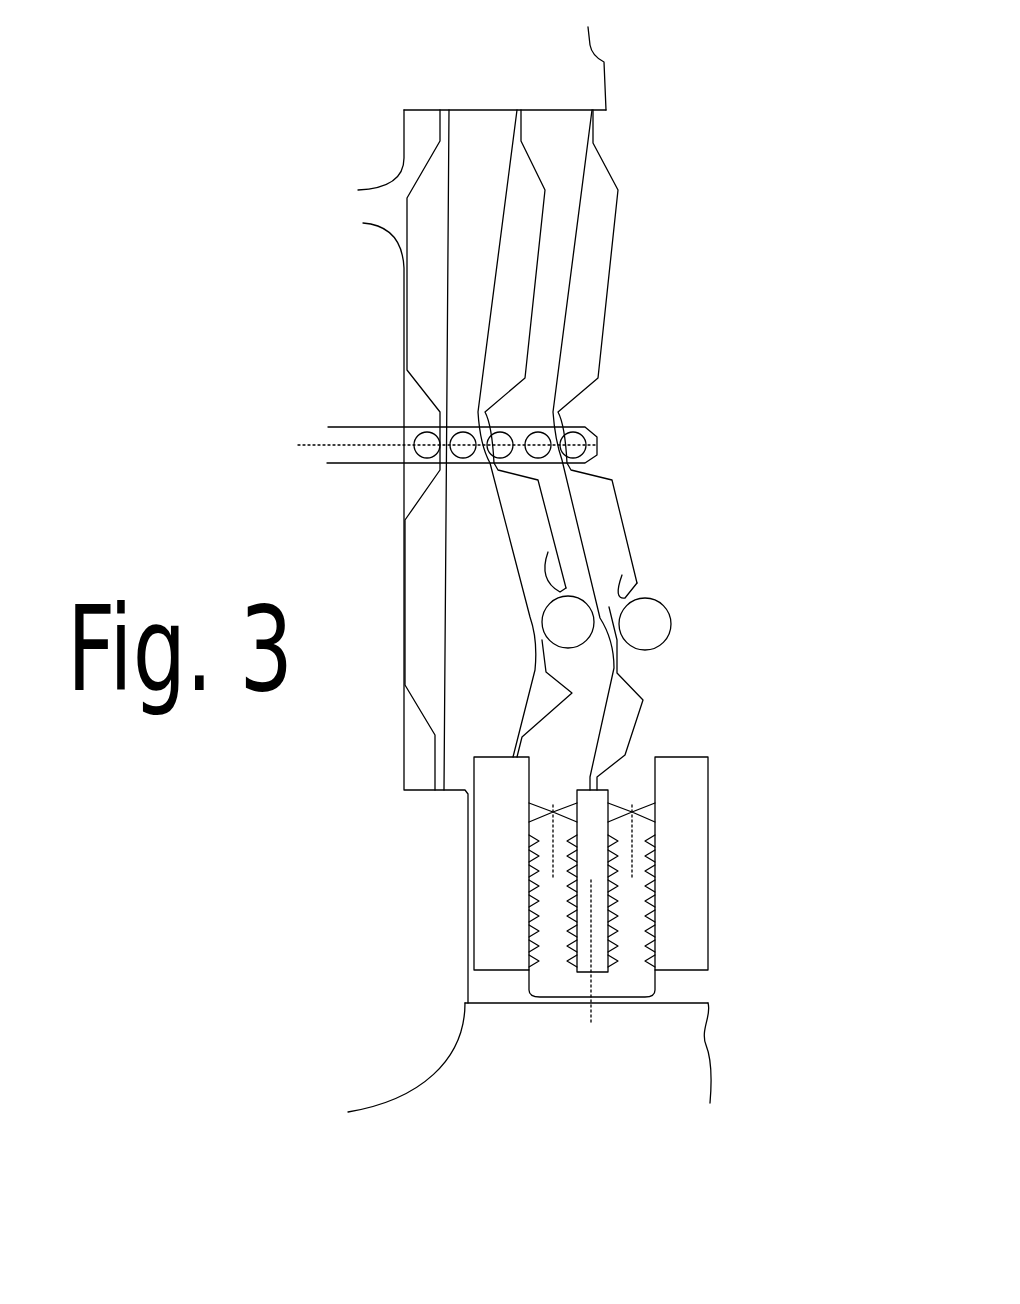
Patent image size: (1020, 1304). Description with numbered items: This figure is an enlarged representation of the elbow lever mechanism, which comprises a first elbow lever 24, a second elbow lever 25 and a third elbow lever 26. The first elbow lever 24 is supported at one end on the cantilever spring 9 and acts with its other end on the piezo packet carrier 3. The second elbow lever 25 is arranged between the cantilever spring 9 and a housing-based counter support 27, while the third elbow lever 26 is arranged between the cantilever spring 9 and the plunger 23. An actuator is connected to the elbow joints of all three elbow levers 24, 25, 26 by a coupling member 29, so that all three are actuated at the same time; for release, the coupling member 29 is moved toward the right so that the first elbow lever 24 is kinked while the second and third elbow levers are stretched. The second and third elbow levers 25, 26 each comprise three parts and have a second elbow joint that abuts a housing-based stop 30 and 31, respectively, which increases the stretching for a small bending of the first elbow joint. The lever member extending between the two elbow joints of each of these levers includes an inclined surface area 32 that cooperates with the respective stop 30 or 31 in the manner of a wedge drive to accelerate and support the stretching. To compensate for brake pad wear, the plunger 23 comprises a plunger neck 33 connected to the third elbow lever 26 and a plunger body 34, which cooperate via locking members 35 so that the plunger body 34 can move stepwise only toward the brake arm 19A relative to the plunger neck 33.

The cantilever spring 9 is at (575, 90).
The first elbow lever 24 is at (423, 292).
The second elbow lever 25 is at (518, 250).
The third elbow lever 26 is at (585, 316).
The coupling member 29 is at (370, 453).
The inclined surface area 32 is at (548, 552).
The housing-based stop 31 is at (650, 612).
The housing-based stop 30 is at (567, 627).
The plunger 23 is at (684, 715).
The plunger neck 33 is at (592, 840).
The locking members 35 is at (612, 858).
The plunger body 34 is at (632, 918).
The housing-based counter support 27 is at (682, 942).
The brake arm 19A is at (690, 1063).
The piezo packet carrier 3 is at (419, 1055).